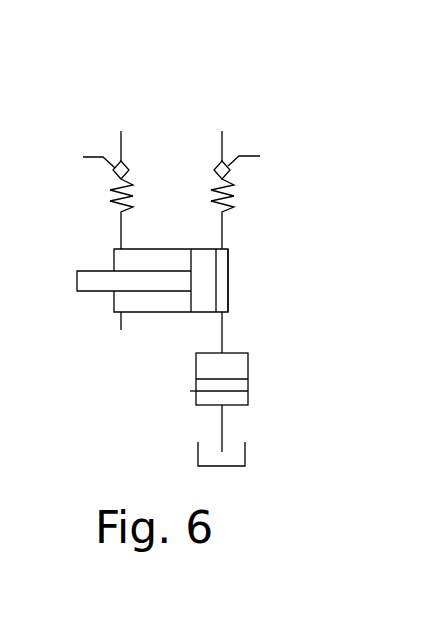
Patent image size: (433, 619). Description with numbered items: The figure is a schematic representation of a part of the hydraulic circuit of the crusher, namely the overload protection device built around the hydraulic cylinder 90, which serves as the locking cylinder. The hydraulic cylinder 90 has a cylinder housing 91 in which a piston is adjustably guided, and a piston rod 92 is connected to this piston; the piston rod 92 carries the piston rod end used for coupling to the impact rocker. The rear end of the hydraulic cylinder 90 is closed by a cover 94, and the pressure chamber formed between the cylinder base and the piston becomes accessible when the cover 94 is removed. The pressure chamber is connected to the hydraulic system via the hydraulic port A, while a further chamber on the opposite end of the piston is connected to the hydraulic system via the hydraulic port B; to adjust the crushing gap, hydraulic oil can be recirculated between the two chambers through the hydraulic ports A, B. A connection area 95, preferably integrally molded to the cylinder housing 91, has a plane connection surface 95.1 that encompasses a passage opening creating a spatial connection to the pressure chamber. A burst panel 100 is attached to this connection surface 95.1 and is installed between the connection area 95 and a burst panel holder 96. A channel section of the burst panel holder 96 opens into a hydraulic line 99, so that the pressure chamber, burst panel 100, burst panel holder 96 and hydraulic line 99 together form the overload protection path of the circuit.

The hydraulic cylinder 90 is at (178, 343).
The cylinder housing 91 is at (135, 312).
The piston rod 92 is at (102, 287).
The cover 94 is at (208, 279).
The connection area 95 is at (222, 333).
The connection surface 95.1 is at (238, 384).
The burst panel holder 96 is at (238, 399).
The hydraulic line 99 is at (222, 424).
The burst panel 100 is at (192, 392).
The hydraulic port A is at (226, 249).
The hydraulic port B is at (118, 248).